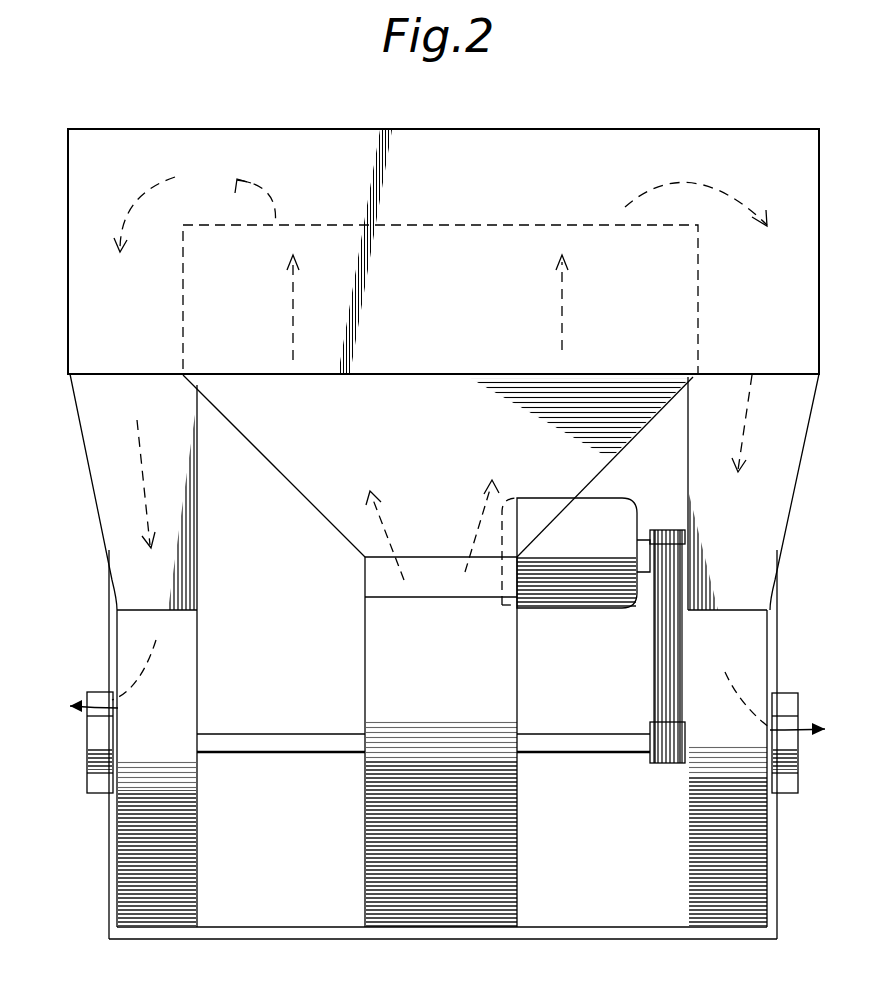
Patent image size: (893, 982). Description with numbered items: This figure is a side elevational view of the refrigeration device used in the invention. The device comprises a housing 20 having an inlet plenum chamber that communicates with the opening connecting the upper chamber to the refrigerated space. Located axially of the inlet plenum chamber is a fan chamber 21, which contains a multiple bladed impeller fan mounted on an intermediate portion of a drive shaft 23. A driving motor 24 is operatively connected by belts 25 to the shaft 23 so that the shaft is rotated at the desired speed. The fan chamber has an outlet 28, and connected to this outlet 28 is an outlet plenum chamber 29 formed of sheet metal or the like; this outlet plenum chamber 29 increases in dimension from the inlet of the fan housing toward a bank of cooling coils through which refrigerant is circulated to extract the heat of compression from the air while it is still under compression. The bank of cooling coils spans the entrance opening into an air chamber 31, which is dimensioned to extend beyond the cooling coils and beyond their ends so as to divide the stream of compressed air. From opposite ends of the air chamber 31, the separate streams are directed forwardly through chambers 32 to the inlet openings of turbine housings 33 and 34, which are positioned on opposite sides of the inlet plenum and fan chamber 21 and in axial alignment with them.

The housing 20 is at (306, 912).
The fan chamber 21 is at (510, 848).
The drive shaft 23 is at (594, 742).
The driving motor 24 is at (612, 512).
The belts 25 is at (666, 645).
The outlet 28 is at (377, 596).
The outlet plenum chamber 29 is at (325, 522).
The air chamber 31 is at (502, 136).
The chambers 32 is at (130, 550).
The turbine housing 33 is at (130, 633).
The turbine housing 34 is at (760, 650).